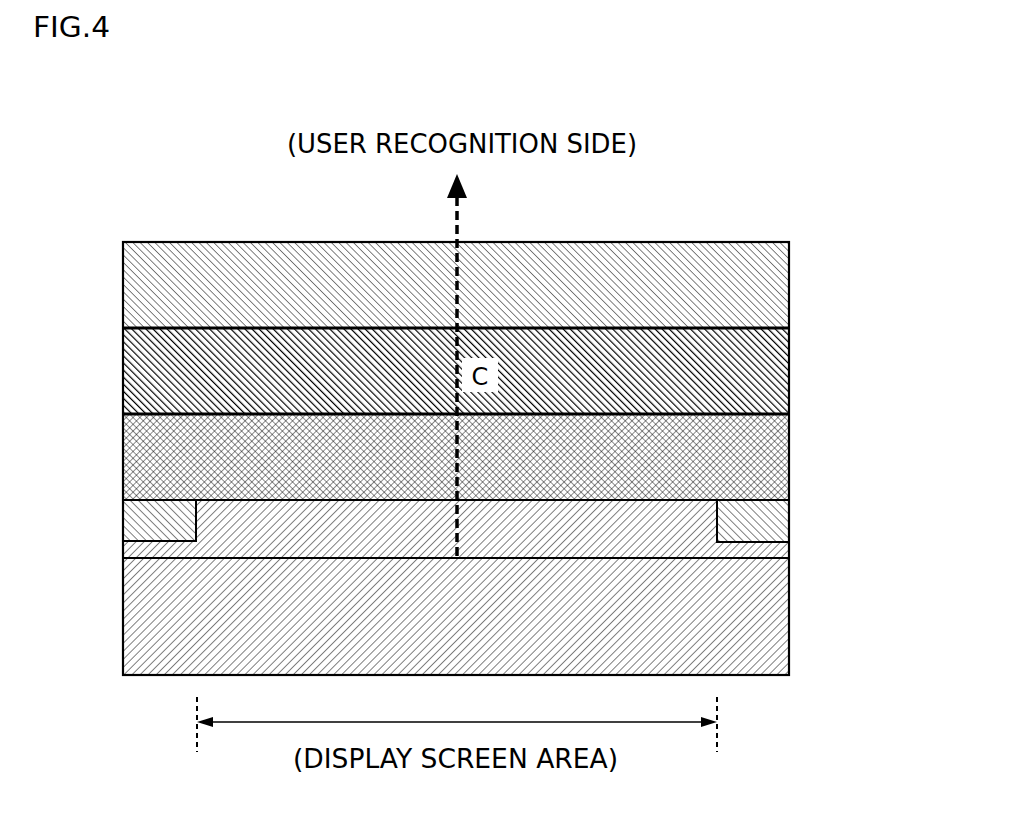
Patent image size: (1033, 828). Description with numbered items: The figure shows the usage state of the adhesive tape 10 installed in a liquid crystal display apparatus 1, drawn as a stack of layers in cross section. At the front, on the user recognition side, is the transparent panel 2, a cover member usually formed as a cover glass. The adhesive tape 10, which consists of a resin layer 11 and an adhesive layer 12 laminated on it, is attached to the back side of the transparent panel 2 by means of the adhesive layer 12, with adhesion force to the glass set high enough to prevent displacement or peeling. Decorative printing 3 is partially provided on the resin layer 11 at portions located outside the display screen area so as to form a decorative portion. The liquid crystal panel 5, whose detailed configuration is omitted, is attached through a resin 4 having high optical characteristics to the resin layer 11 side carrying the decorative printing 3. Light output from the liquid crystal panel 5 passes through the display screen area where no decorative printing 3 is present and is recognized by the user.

The liquid crystal display apparatus 1 is at (785, 180).
The transparent panel 2 is at (789, 286).
The decorative printing 3 is at (789, 517).
The resin 4 is at (123, 550).
The liquid crystal panel 5 is at (789, 626).
The adhesive tape 10 is at (537, 414).
The resin layer 11 is at (513, 457).
The adhesive layer 12 is at (789, 359).